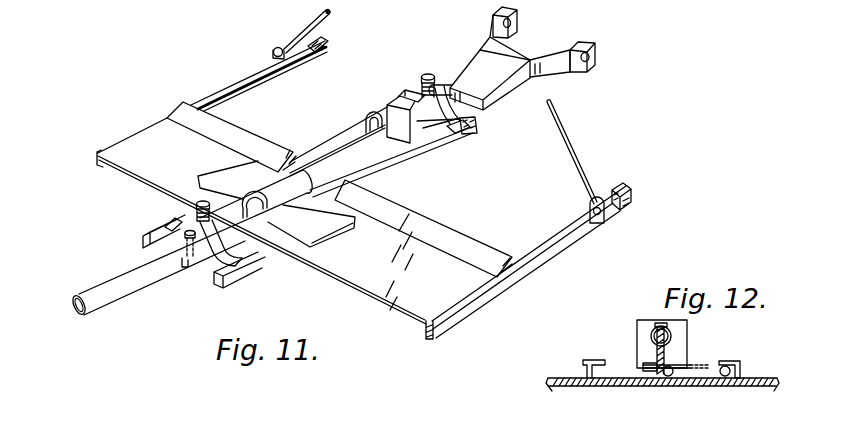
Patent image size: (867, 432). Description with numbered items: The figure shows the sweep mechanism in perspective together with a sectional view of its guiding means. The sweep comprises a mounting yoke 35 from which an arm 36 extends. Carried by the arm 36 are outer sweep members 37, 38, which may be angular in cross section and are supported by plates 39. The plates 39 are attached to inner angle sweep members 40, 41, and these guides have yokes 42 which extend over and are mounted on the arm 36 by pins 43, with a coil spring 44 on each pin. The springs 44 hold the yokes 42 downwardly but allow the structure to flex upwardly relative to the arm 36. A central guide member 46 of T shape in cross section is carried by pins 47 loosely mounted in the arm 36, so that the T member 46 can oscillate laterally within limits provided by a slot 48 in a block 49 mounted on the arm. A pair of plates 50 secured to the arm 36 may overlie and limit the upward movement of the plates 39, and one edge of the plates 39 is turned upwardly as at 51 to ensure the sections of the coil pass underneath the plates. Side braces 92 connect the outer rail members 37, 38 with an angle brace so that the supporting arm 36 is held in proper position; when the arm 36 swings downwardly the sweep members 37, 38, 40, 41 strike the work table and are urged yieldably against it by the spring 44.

In FIG. 11, the mounting yoke 35 is at (557, 72).
In FIG. 11, the arm 36 is at (101, 290).
In FIG. 11, the outer sweep member 37 is at (437, 328).
In FIG. 11, the outer sweep member 38 is at (223, 92).
In FIG. 11, the plates 39 is at (138, 163).
In FIG. 11, the inner angle sweep member 40 is at (258, 265).
In FIG. 12, the inner angle sweep member 40 is at (588, 362).
In FIG. 11, the inner angle sweep member 41 is at (153, 233).
In FIG. 12, the inner angle sweep member 41 is at (736, 362).
In FIG. 11, the yoke 42 is at (213, 265).
In FIG. 11, the pin 43 is at (200, 203).
In FIG. 11, the coil spring 44 is at (197, 213).
In FIG. 11, the central guide member 46 is at (180, 266).
In FIG. 12, the central guide member 46 is at (652, 373).
In FIG. 12, the pin 47 is at (660, 322).
In FIG. 12, the slot 48 is at (677, 363).
In FIG. 11, the block 49 is at (388, 98).
In FIG. 12, the block 49 is at (642, 340).
In FIG. 11, the plates 50 is at (335, 227).
In FIG. 11, the upturned edge 51 is at (242, 133).
In FIG. 11, the side brace 92 is at (311, 23).